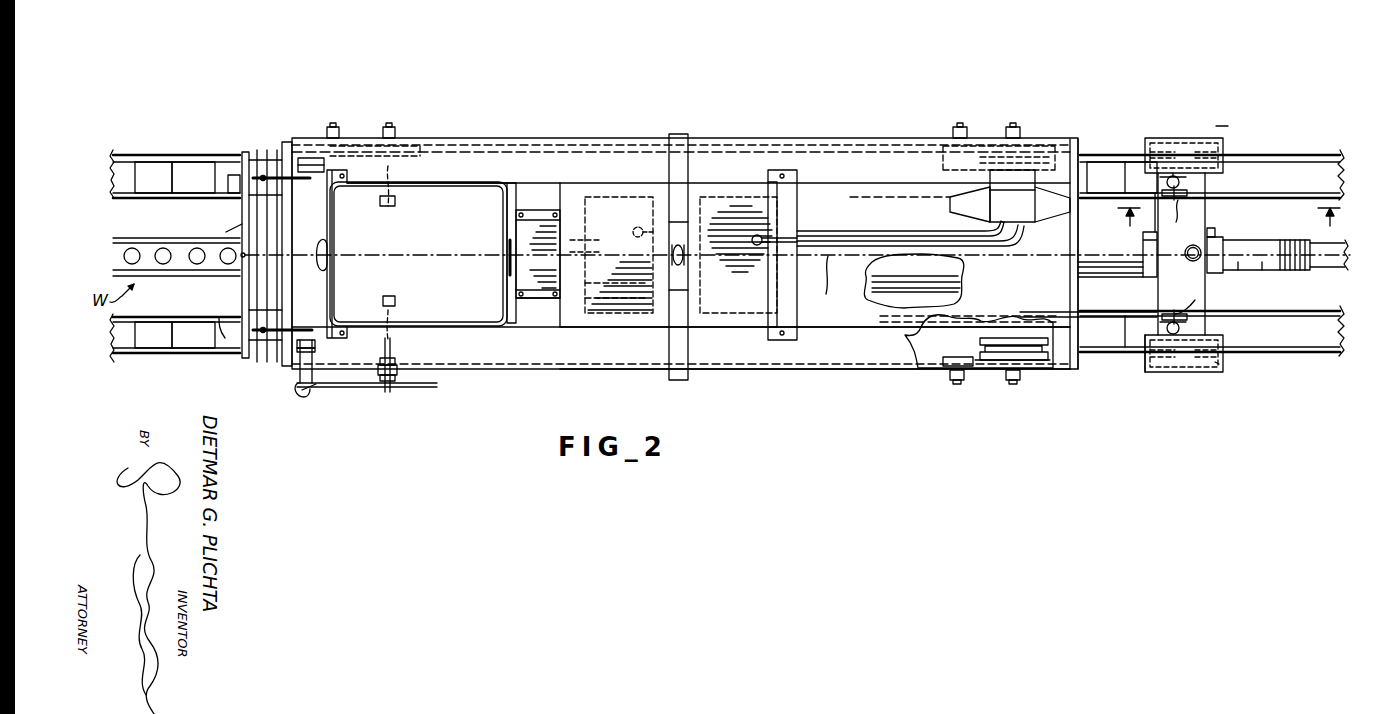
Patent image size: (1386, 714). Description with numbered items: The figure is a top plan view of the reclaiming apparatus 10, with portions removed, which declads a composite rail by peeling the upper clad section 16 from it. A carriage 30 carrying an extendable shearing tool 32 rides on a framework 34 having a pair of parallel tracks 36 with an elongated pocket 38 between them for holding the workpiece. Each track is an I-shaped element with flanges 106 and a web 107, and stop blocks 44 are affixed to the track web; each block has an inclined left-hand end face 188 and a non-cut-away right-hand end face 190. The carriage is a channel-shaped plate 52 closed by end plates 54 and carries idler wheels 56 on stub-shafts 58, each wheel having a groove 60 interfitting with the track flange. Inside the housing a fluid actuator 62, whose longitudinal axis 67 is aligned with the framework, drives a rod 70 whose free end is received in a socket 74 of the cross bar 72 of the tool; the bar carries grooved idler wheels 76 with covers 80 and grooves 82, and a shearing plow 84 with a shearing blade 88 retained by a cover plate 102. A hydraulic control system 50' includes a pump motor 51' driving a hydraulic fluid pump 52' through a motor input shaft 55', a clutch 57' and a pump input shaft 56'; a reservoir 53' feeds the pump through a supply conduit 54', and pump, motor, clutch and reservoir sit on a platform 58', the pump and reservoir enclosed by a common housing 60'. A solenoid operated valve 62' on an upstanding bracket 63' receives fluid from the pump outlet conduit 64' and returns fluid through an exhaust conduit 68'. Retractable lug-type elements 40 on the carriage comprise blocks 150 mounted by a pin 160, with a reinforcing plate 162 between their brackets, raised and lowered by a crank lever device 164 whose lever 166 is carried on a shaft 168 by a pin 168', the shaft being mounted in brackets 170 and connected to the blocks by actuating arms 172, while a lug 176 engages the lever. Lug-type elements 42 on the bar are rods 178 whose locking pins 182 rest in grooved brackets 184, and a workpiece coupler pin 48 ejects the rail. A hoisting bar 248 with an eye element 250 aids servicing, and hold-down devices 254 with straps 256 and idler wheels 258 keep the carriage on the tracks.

The reclaiming apparatus 10 is at (728, 80).
The upper clad section 16 is at (1336, 242).
The carriage 30 is at (562, 137).
The extendable shearing tool 32 is at (1232, 131).
The framework 34 is at (1306, 153).
The tracks 36 is at (226, 153).
The pocket 38 is at (1326, 298).
The retractable lug-type element 40 is at (258, 358).
The lug-type element 42 is at (1170, 176).
The stop block 44 is at (192, 157).
The workpiece coupler pin 48 is at (1186, 260).
The hydraulic control system 50' is at (427, 140).
The pump motor 51' is at (417, 254).
The channel-shaped plate 52 is at (815, 372).
The hydraulic fluid pump 52' is at (619, 231).
The reservoir 53' is at (731, 204).
The end plate 54 is at (664, 294).
The supply conduit 54' is at (629, 248).
The motor input shaft 55' is at (487, 253).
The idler wheel 56 is at (1007, 389).
The pump input shaft 56' is at (594, 229).
The clutch 57' is at (538, 238).
The stub-shaft 58 is at (659, 257).
The platform 58' is at (538, 328).
The groove 60 is at (970, 323).
The common housing 60' is at (772, 218).
The fluid actuator 62 is at (935, 281).
The solenoid operated valve 62' is at (968, 159).
The upstanding bracket 63' is at (979, 195).
The pump fluid outlet conduit 64' is at (900, 219).
The longitudinal axis 67 is at (822, 280).
The exhaust conduit 68' is at (910, 224).
The rod 70 is at (1092, 263).
The cross and support bar element 72 is at (1172, 292).
The socket 74 is at (1156, 209).
The grooved idler wheel 76 is at (1224, 365).
The cover 80 is at (1146, 372).
The groove 82 is at (1180, 158).
The shearing plow 84 is at (1250, 268).
The shearing blade 88 is at (1254, 270).
The cover plate 102 is at (1222, 236).
The flange 106 is at (150, 198).
The web 107 is at (230, 190).
The block 150 is at (250, 331).
The pin 160 is at (289, 293).
The reinforcing plate 162 is at (244, 286).
The crank lever device 164 is at (364, 388).
The lever 166 is at (402, 386).
The shaft 168 is at (323, 312).
The pin 168' is at (327, 401).
The bracket 170 is at (318, 159).
The actuating arm 172 is at (292, 147).
The lug 176 is at (384, 388).
The lug-type rod 178 is at (1182, 182).
The locking pin 182 is at (1196, 314).
The grooved bracket 184 is at (1186, 196).
The left-hand end face 188 is at (152, 173).
The right-hand end face 190 is at (226, 352).
The hoisting bar 248 is at (678, 140).
The eye element 250 is at (688, 260).
The hold-down device 254 is at (378, 150).
The strap 256 is at (955, 362).
The idler wheel 258 is at (916, 337).